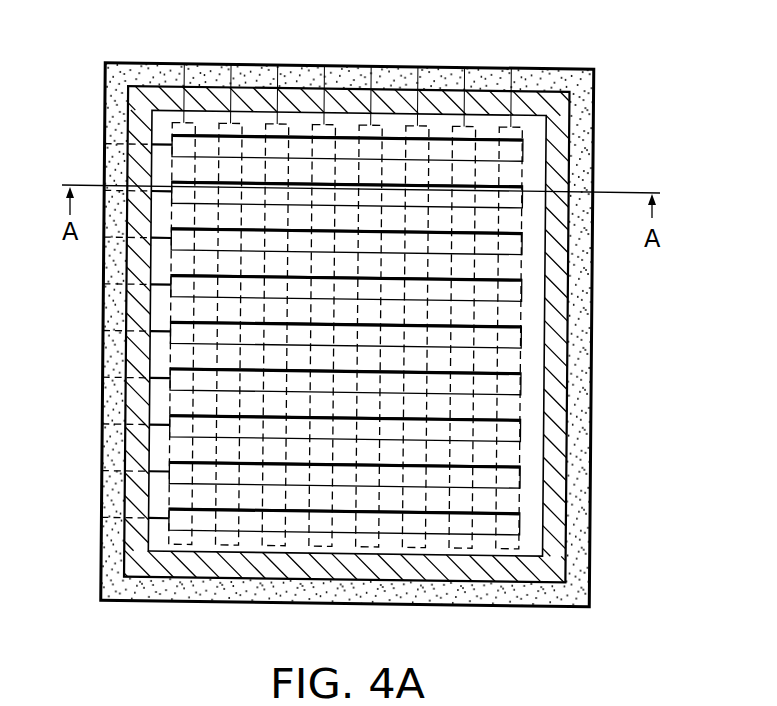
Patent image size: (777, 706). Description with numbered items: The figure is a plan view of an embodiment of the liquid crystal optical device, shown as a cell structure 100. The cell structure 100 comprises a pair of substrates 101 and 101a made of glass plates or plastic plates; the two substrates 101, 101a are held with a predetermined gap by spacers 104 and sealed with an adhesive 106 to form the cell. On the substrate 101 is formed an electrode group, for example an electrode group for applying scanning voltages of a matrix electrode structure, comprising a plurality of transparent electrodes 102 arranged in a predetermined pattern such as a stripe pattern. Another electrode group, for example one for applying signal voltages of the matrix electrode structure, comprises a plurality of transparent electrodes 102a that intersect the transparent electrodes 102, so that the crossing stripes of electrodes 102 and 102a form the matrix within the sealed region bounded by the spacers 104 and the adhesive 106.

The cell structure 100 is at (419, 57).
The substrate 101 is at (435, 330).
The substrate 101a is at (536, 147).
The transparent electrodes 102 is at (512, 221).
The transparent electrodes 102a is at (253, 143).
The spacers 104 is at (485, 103).
The adhesive 106 is at (573, 488).